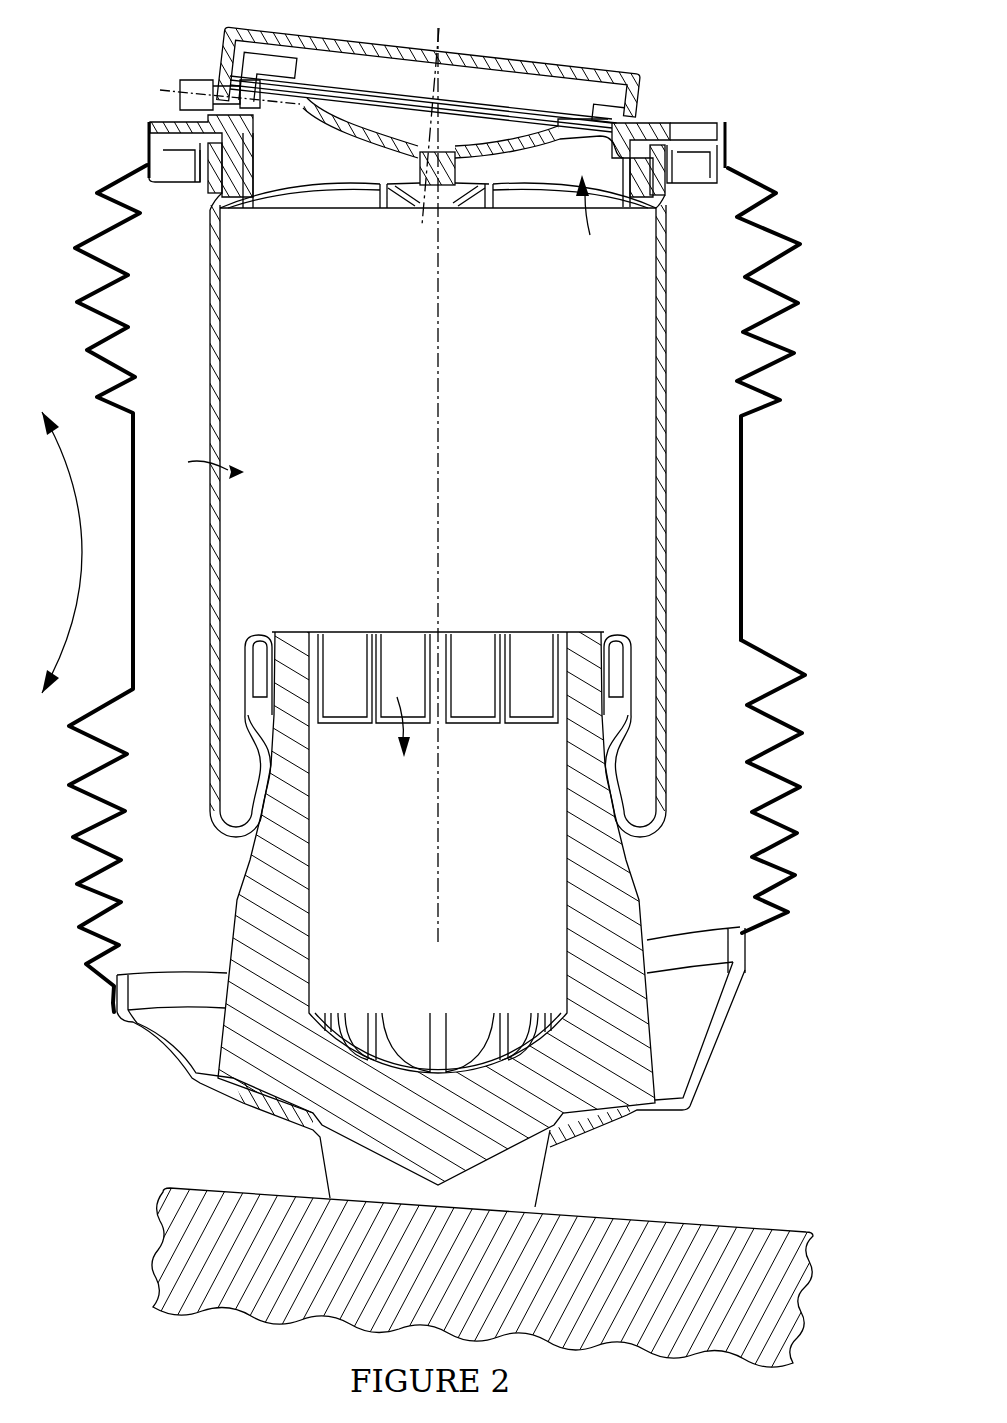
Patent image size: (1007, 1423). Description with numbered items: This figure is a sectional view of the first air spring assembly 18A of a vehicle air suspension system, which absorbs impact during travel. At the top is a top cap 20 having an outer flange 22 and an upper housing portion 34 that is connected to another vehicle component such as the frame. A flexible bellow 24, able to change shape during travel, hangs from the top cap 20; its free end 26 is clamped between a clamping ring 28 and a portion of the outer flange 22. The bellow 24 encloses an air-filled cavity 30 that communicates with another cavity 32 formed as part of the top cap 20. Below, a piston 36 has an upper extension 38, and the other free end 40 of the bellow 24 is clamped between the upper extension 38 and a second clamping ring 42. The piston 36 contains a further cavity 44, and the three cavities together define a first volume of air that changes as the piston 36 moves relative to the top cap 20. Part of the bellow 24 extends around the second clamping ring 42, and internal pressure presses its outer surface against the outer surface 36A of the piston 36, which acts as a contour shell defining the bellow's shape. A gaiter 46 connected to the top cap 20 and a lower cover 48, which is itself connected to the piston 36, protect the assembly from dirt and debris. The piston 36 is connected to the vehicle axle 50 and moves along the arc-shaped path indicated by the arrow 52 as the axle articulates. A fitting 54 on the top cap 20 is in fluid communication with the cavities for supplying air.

The air spring assembly 18A is at (478, 588).
The top cap 20 is at (687, 167).
The outer flange 22 is at (240, 180).
The bellow 24 is at (212, 520).
The free end 26 is at (653, 143).
The clamping ring 28 is at (662, 182).
The cavity 30 is at (201, 463).
The cavity 32 is at (594, 218).
The upper housing portion 34 is at (562, 75).
The piston 36 is at (247, 943).
The outer surface 36A is at (258, 803).
The upper extension 38 is at (287, 650).
The free end 40 is at (605, 650).
The second clamping ring 42 is at (615, 662).
The cavity 44 is at (438, 695).
The gaiter 46 is at (781, 718).
The lower cover 48 is at (713, 1043).
The vehicle axle 50 is at (182, 1248).
The arrow 52 is at (82, 552).
The fitting 54 is at (182, 88).